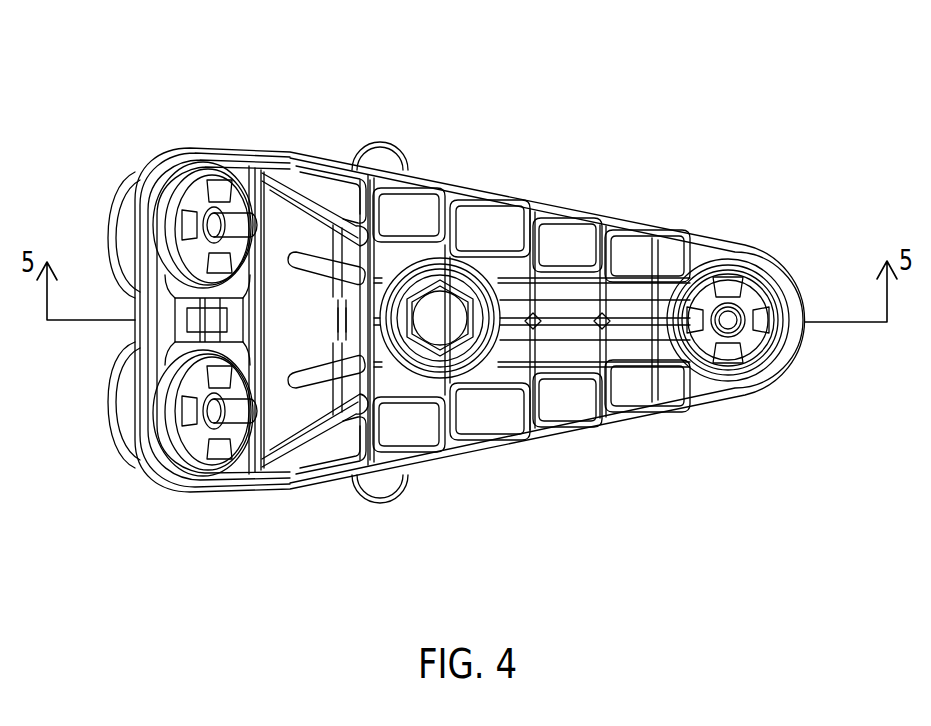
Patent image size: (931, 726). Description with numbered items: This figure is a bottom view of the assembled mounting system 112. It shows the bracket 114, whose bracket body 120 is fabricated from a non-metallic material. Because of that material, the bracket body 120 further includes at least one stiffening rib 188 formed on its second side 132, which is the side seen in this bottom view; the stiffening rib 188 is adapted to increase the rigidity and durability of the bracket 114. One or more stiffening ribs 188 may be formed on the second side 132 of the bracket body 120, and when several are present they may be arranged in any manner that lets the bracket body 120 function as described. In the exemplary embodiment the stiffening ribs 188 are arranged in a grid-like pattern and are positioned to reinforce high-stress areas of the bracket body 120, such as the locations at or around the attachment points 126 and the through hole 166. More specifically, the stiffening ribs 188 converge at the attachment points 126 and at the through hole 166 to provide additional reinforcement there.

The mounting system 112 is at (745, 78).
The bracket 114 is at (723, 192).
The bracket body 120 is at (503, 193).
The attachment points 126 is at (107, 160).
The second side 132 is at (268, 192).
The through hole 166 is at (477, 350).
The stiffening rib 188 is at (570, 268).